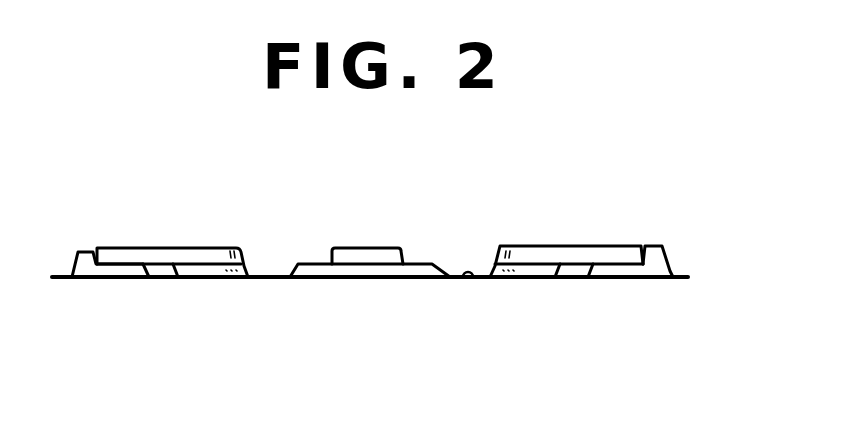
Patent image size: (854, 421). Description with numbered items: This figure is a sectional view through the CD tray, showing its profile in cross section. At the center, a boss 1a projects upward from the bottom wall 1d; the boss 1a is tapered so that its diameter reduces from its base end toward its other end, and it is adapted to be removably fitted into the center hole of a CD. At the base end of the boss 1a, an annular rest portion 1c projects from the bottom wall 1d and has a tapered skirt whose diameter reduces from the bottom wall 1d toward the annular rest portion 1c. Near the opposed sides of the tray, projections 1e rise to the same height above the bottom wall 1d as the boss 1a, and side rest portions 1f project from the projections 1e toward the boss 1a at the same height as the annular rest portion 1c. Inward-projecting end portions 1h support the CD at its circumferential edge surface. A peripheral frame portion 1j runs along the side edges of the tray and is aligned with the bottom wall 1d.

The boss 1a is at (372, 248).
The annular rest portion 1c is at (312, 262).
The bottom wall 1d is at (473, 274).
The projections 1e is at (94, 250).
The side rest portions 1f is at (143, 263).
The inward-projecting end portions 1h is at (224, 248).
The peripheral frame portion 1j is at (688, 272).